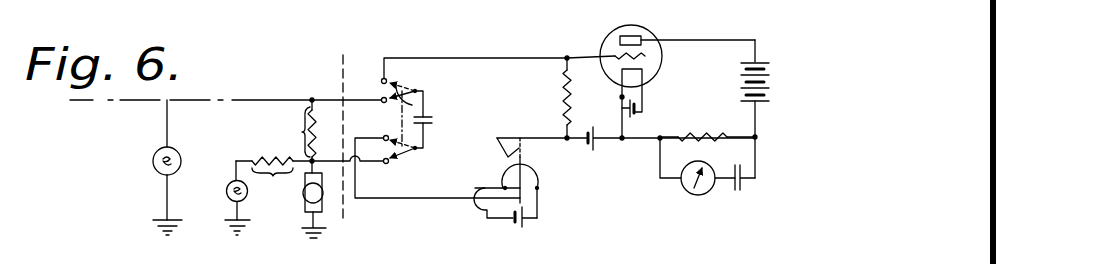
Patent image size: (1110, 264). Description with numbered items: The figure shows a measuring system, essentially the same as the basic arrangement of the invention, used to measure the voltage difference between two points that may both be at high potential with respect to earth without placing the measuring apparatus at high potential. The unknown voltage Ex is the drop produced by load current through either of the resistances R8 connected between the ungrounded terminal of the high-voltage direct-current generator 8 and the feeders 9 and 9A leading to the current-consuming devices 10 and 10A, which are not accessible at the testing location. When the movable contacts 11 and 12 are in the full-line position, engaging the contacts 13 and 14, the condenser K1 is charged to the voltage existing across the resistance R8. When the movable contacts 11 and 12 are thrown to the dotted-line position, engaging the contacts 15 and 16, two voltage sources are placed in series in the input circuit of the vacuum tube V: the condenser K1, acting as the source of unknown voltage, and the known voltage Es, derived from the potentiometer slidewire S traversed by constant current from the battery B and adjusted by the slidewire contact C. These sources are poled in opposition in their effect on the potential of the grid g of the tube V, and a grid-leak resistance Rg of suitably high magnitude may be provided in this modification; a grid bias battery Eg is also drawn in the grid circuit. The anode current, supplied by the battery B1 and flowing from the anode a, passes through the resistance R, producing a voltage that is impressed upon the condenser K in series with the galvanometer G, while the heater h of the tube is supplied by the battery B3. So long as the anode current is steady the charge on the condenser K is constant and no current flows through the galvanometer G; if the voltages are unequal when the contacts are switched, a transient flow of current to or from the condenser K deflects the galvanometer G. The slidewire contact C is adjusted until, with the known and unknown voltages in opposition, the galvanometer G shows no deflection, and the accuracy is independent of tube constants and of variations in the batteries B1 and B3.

The high-voltage direct-current generator 8 is at (305, 199).
The feeder 9 is at (246, 100).
The feeder 9A is at (248, 156).
The current-consuming device 10 is at (181, 163).
The current-consuming device 10A is at (228, 187).
The movable contact 11 is at (414, 150).
The movable contact 12 is at (419, 89).
The contact 13 is at (384, 164).
The contact 14 is at (381, 102).
The contact 15 is at (381, 81).
The contact 16 is at (384, 140).
The condenser K1 is at (432, 116).
The unknown voltage Ex is at (281, 152).
The resistance R8 is at (315, 128).
The known voltage Es is at (512, 143).
The slidewire contact C is at (505, 157).
The potentiometer slidewire S is at (538, 182).
The battery B is at (524, 222).
The grid-leak resistance Rg is at (572, 95).
The grid bias battery Eg is at (590, 154).
The vacuum tube V is at (651, 30).
The anode a is at (627, 36).
The grid g is at (614, 54).
The heater h is at (644, 74).
The battery B3 is at (637, 113).
The battery B1 is at (769, 88).
The resistance R is at (712, 130).
The galvanometer G is at (700, 195).
The condenser K is at (742, 186).